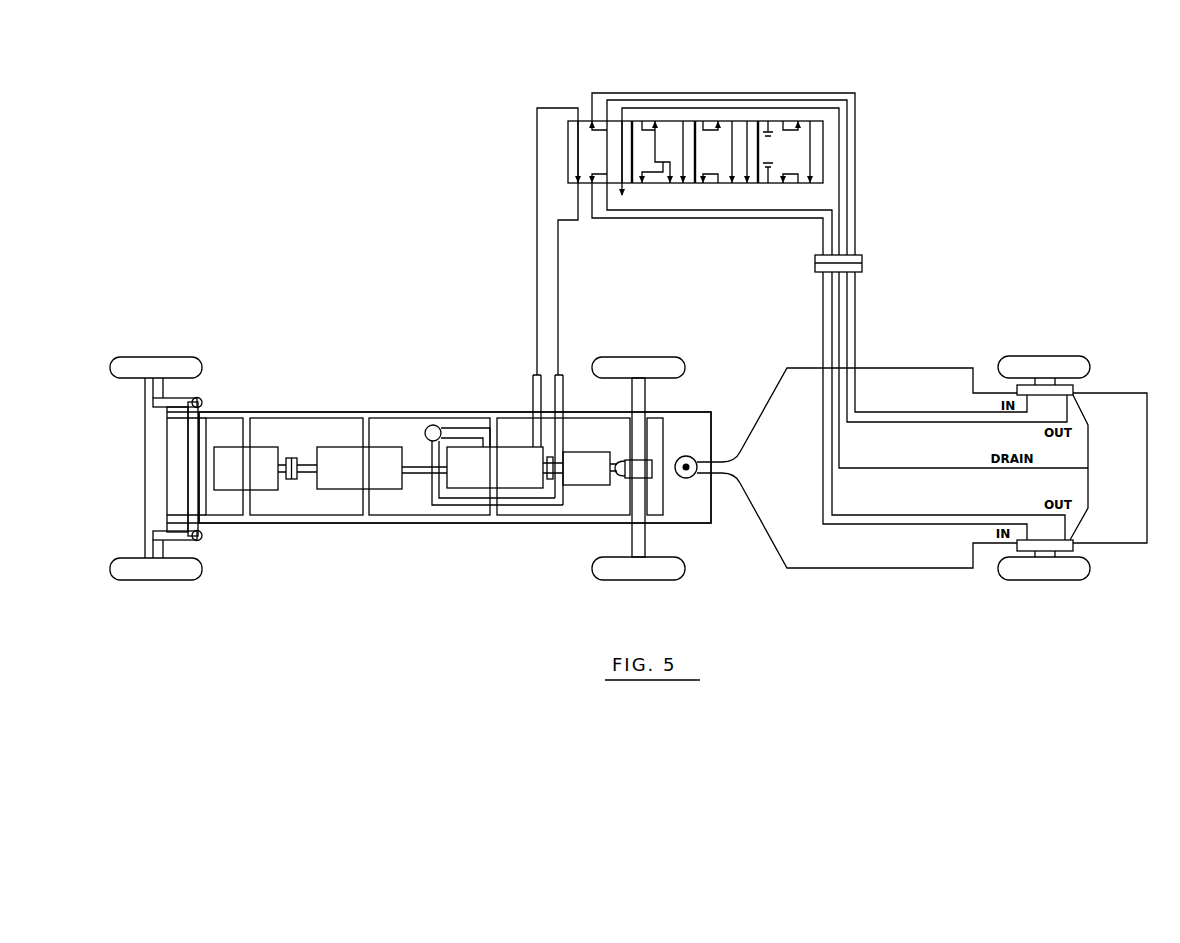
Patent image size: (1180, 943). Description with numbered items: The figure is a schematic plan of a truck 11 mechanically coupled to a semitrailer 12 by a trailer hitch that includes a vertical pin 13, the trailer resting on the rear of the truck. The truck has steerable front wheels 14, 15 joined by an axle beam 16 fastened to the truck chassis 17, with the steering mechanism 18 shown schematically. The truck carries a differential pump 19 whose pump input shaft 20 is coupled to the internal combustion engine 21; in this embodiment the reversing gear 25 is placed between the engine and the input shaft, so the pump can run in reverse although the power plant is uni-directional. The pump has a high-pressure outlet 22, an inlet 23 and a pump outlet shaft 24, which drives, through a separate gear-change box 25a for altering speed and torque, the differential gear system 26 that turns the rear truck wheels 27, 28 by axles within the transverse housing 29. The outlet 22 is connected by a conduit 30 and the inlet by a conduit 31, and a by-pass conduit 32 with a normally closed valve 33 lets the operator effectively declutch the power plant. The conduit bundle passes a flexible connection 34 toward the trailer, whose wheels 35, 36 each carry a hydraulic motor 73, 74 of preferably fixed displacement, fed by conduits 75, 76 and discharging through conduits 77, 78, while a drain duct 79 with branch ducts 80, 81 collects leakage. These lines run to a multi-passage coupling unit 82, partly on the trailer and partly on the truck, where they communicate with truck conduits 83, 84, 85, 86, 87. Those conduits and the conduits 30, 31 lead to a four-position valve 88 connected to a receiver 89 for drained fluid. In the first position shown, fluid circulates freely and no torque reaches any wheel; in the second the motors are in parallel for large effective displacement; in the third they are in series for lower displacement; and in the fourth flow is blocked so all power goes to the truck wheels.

The truck 11 is at (392, 386).
The semitrailer 12 is at (954, 349).
The vertical pin 13 is at (688, 457).
The steerable front wheel 14 is at (186, 358).
The steerable front wheel 15 is at (185, 580).
The axle beam 16 is at (150, 457).
The truck chassis 17 is at (282, 412).
The steering mechanism 18 is at (202, 403).
The differential pump 19 is at (512, 489).
The pump input shaft 20 is at (423, 475).
The internal combustion engine 21 is at (258, 447).
The high-pressure outlet 22 is at (532, 445).
The inlet 23 is at (532, 489).
The pump outlet shaft 24 is at (553, 452).
The reversing gear 25 is at (352, 489).
The gear-change box 25a is at (584, 485).
The differential gear system 26 is at (630, 460).
The rear truck wheel 27 is at (668, 357).
The rear truck wheel 28 is at (670, 580).
The transverse housing 29 is at (645, 400).
The conduit 30 is at (537, 322).
The conduit 31 is at (558, 322).
The by-pass conduit 32 is at (448, 506).
The normally closed valve 33 is at (425, 432).
The hitch connection 34 is at (782, 385).
The trailer wheel 35 is at (1076, 358).
The trailer wheel 36 is at (1075, 580).
The hydraulic motor 73 is at (1074, 391).
The hydraulic motor 74 is at (1074, 546).
The conduit 75 is at (940, 412).
The conduit 76 is at (946, 522).
The conduit 77 is at (945, 420).
The conduit 78 is at (948, 514).
The drain duct 79 is at (945, 467).
The branch duct 80 is at (1086, 422).
The branch duct 81 is at (1083, 520).
The multi-passage coupling unit 82 is at (862, 264).
The conduit 83 is at (800, 94).
The conduit 84 is at (677, 220).
The conduit 85 is at (852, 124).
The conduit 86 is at (752, 211).
The conduit 87 is at (840, 200).
The four-position valve 88 is at (659, 183).
The receiver 89 is at (623, 197).